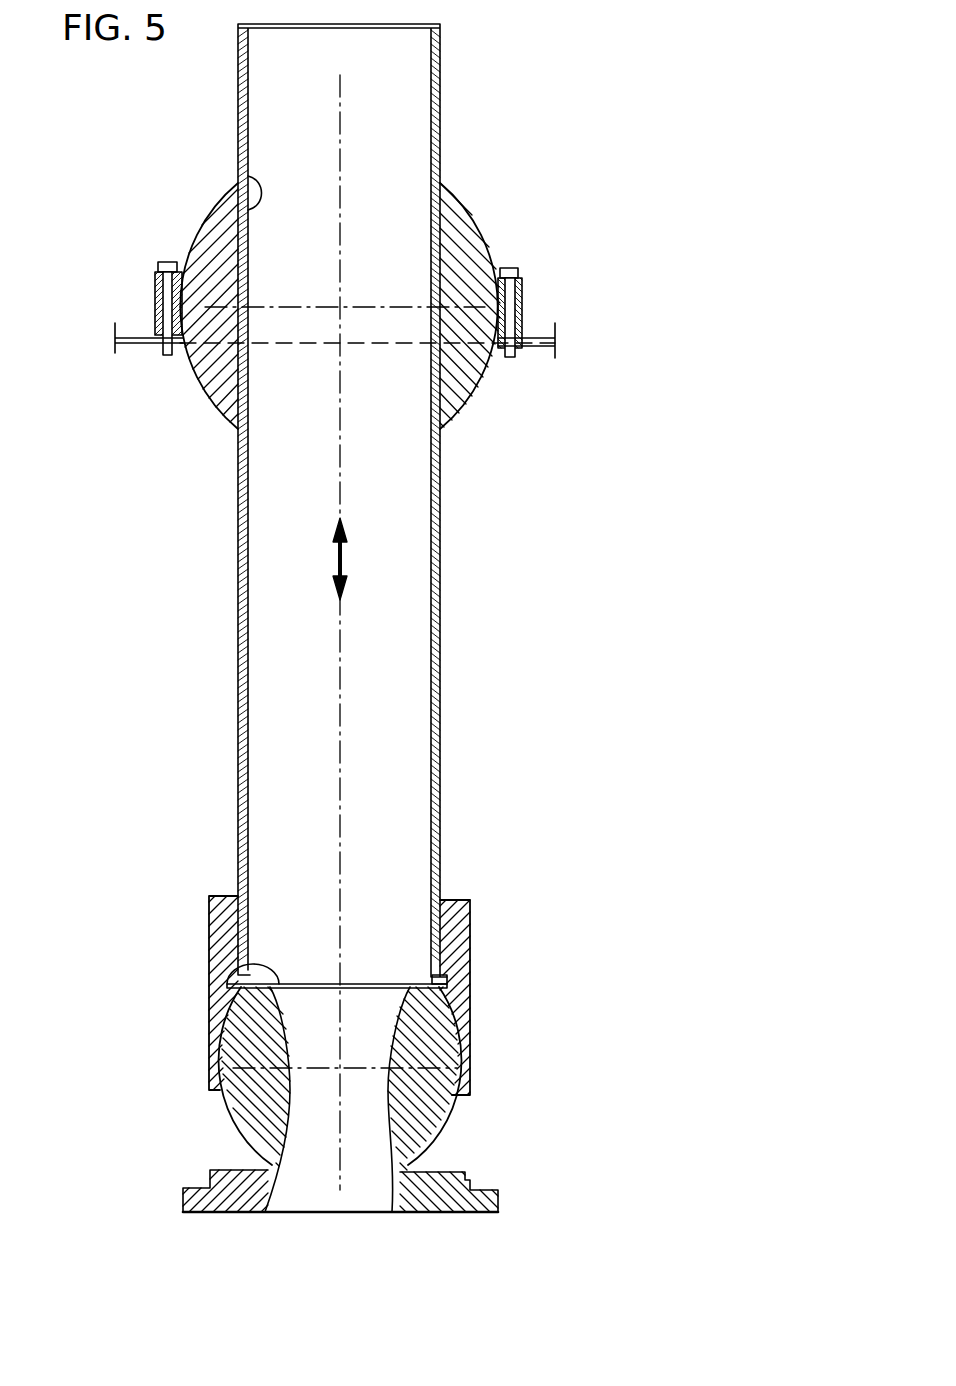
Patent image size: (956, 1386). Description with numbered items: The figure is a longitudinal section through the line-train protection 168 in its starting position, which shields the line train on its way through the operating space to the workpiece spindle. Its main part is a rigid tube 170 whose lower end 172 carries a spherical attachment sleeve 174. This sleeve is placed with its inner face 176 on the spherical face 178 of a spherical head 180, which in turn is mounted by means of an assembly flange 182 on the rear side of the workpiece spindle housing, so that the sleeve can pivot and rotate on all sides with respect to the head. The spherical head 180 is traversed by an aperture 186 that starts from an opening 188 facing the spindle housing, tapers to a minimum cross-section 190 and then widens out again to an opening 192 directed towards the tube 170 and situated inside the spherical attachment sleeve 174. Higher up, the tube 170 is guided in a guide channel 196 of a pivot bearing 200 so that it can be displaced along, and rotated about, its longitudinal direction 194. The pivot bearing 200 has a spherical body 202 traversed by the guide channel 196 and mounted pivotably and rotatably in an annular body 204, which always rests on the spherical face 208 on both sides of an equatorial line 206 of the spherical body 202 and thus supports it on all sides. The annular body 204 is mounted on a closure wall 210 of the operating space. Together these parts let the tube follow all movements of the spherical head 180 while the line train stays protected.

The line-train protection 168 is at (505, 732).
The rigid tube 170 is at (440, 660).
The end of the tube 172 is at (470, 922).
The spherical attachment sleeve 174 is at (470, 997).
The inner face 176 is at (470, 1048).
The spherical face 178 is at (470, 1028).
The spherical head 180 is at (446, 1126).
The assembly flange 182 is at (498, 1200).
The aperture 186 is at (392, 1212).
The opening 188 is at (265, 1212).
The minimum cross-section 190 is at (303, 1090).
The opening 192 is at (243, 960).
The longitudinal direction 194 is at (342, 553).
The guide channel 196 is at (240, 172).
The pivot bearing 200 is at (476, 204).
The spherical body 202 is at (462, 404).
The annular body 204 is at (155, 290).
The equatorial line 206 is at (310, 307).
The spherical face 208 is at (490, 368).
The closure wall 210 is at (555, 340).